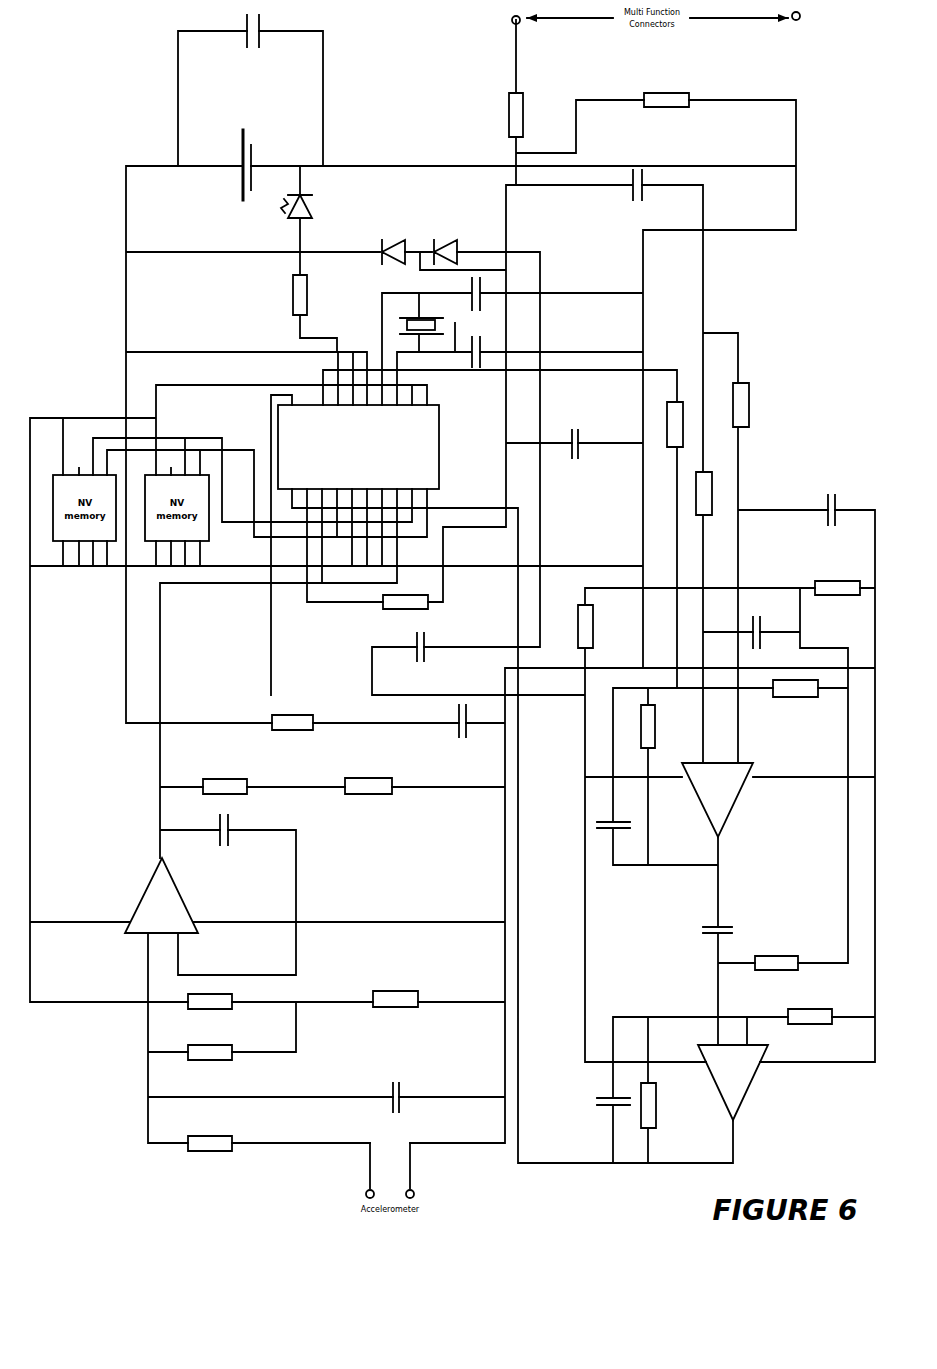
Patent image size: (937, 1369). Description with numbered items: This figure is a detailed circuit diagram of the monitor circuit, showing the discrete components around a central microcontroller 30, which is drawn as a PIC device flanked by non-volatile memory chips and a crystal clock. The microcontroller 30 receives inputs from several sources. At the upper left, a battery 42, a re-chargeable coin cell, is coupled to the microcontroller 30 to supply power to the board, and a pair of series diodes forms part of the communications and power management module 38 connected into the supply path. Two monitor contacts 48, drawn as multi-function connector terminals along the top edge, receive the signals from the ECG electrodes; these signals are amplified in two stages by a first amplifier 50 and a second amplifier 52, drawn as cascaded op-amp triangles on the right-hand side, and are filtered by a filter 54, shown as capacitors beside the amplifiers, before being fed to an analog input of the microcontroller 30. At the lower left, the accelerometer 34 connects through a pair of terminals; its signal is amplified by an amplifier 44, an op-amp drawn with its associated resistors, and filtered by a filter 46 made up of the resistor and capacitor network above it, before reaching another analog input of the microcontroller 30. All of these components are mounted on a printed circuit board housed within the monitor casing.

The microcontroller 30 is at (305, 433).
The accelerometer 34 is at (382, 1186).
The communications and power management module 38 is at (419, 235).
The battery 42 is at (250, 131).
The amplifier 44 is at (155, 905).
The filter 46 is at (286, 814).
The monitor contacts 48 is at (511, 23).
The amplifier 50 is at (728, 791).
The amplifier 52 is at (741, 1089).
The filter 54 is at (622, 850).